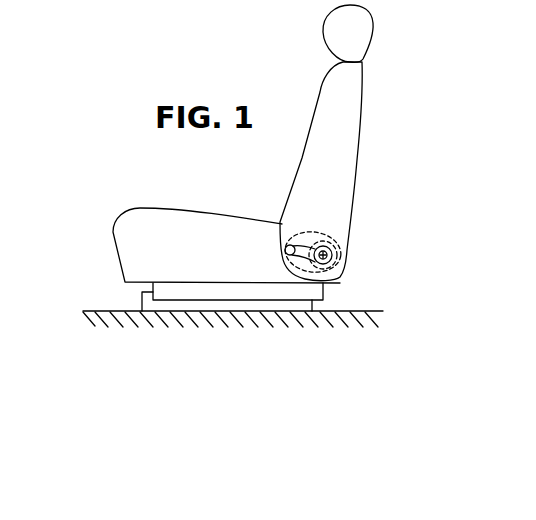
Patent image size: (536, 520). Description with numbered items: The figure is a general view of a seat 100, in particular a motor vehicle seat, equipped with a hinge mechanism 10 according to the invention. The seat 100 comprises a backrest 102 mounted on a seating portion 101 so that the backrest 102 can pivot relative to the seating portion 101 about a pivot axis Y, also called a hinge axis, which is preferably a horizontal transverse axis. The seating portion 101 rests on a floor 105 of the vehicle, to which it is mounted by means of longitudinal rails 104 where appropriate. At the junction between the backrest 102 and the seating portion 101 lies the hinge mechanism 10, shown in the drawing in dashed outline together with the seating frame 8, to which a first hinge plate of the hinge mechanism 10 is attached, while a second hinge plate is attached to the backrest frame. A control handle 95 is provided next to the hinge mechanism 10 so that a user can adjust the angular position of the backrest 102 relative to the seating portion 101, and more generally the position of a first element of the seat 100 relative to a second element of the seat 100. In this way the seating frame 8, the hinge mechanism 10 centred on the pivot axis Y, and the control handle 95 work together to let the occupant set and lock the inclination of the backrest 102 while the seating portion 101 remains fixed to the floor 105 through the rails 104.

The seat 100 is at (108, 193).
The seating portion 101 is at (192, 230).
The backrest 102 is at (343, 120).
The longitudinal rails 104 is at (117, 290).
The floor 105 is at (120, 320).
The control handle 95 is at (282, 241).
The seating frame 8 is at (328, 233).
The pivot axis Y is at (342, 250).
The hinge mechanism 10 is at (346, 264).